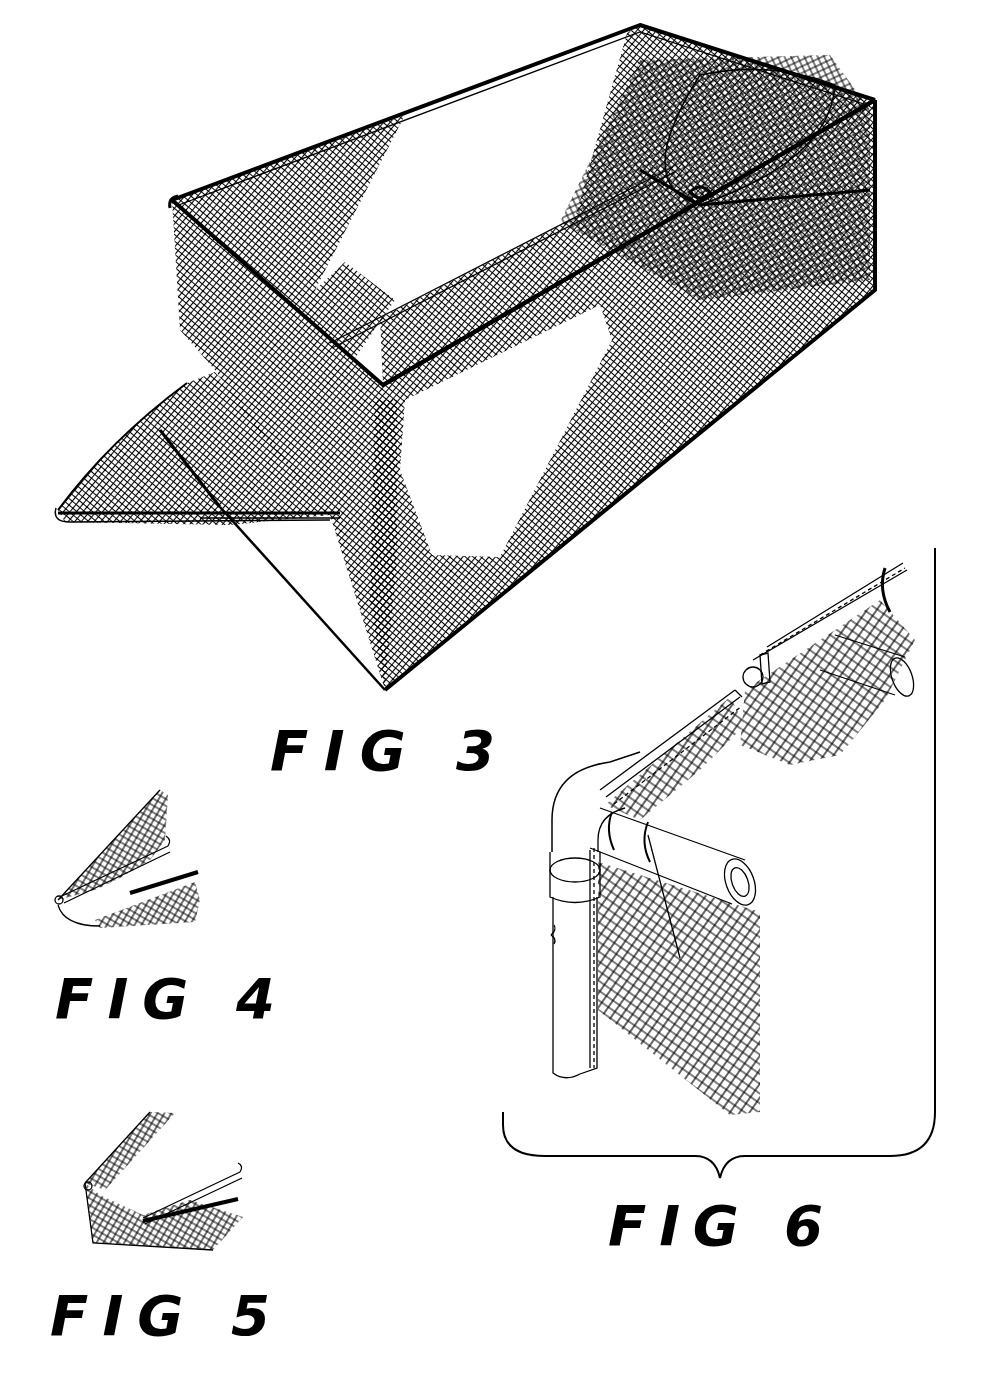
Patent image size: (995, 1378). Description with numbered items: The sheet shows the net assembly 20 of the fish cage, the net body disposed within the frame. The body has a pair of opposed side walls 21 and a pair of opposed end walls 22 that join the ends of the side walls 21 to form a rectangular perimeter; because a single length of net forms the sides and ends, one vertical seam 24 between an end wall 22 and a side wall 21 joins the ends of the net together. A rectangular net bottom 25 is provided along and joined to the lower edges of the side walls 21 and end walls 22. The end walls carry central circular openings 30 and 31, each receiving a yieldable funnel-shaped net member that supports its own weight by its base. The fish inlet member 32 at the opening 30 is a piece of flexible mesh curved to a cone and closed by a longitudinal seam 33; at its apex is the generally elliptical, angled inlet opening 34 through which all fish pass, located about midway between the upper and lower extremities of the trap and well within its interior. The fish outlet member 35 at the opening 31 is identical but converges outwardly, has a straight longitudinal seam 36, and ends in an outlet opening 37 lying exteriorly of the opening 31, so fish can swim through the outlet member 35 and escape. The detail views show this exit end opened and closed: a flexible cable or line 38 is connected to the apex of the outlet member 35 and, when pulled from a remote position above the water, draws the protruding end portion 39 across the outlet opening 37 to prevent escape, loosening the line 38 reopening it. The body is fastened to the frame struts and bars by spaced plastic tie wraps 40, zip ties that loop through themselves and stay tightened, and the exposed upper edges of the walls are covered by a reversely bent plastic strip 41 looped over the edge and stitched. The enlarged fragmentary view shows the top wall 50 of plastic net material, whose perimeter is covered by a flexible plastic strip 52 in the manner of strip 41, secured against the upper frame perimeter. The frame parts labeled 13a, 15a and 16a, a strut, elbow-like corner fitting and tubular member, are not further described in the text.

In FIG. 3, the net assembly 20 is at (374, 124).
In FIG. 3, the side wall 21 is at (256, 186).
In FIG. 3, the end wall 22 is at (748, 58).
In FIG. 3, the vertical seam 24 is at (688, 39).
In FIG. 3, the net bottom 25 is at (588, 343).
In FIG. 3, the circular opening 30 is at (806, 81).
In FIG. 3, the circular opening 31 is at (388, 481).
In FIG. 3, the fish inlet member 32 is at (640, 170).
In FIG. 3, the longitudinal seam 33 is at (872, 202).
In FIG. 3, the inlet opening 34 is at (568, 223).
In FIG. 3, the fish outlet member 35 is at (110, 443).
In FIG. 4, the fish outlet member 35 is at (131, 823).
In FIG. 5, the fish outlet member 35 is at (136, 1143).
In FIG. 3, the straight seam 36 is at (208, 533).
In FIG. 4, the straight seam 36 is at (200, 896).
In FIG. 5, the straight seam 36 is at (240, 1212).
In FIG. 3, the outlet opening 37 is at (71, 526).
In FIG. 4, the outlet opening 37 is at (90, 910).
In FIG. 4, the flexible cable or line 38 is at (170, 858).
In FIG. 5, the flexible cable or line 38 is at (240, 1176).
In FIG. 4, the protruding end portion 39 is at (60, 888).
In FIG. 5, the protruding end portion 39 is at (88, 1218).
In FIG. 6, the tie wrap 40 is at (553, 940).
In FIG. 3, the strip 41 is at (170, 206).
In FIG. 6, the top wall 50 is at (658, 735).
In FIG. 6, the flexible plastic strip 52 is at (594, 782).
In FIG. 6, the netting 13a is at (898, 697).
In FIG. 6, the elbow fitting 15a is at (562, 838).
In FIG. 6, the tubular frame member 16a is at (757, 902).